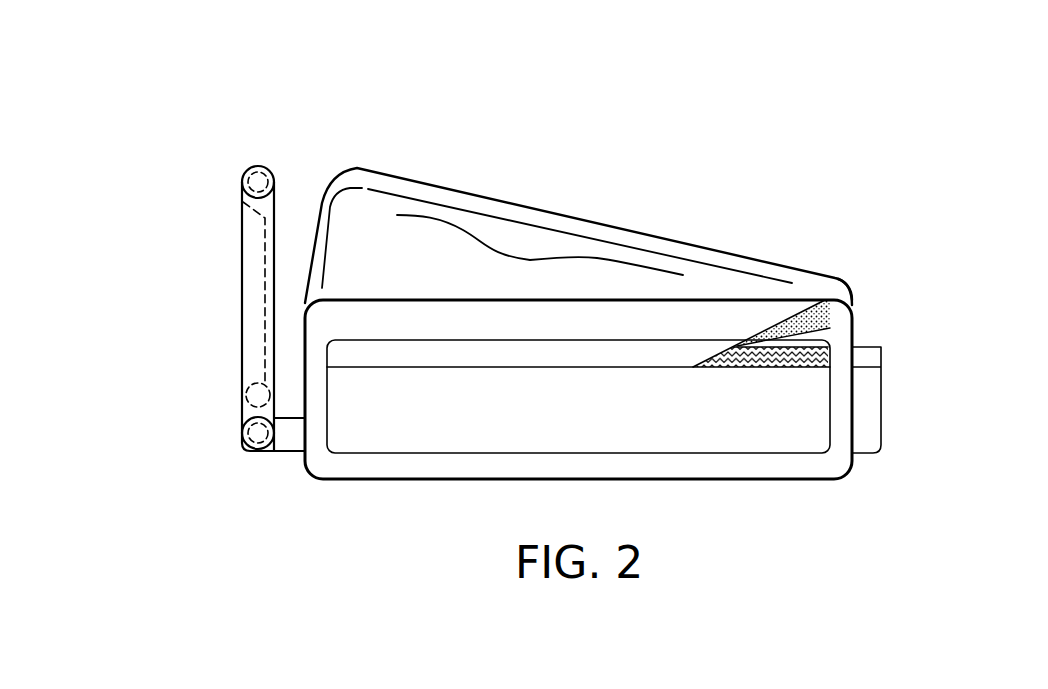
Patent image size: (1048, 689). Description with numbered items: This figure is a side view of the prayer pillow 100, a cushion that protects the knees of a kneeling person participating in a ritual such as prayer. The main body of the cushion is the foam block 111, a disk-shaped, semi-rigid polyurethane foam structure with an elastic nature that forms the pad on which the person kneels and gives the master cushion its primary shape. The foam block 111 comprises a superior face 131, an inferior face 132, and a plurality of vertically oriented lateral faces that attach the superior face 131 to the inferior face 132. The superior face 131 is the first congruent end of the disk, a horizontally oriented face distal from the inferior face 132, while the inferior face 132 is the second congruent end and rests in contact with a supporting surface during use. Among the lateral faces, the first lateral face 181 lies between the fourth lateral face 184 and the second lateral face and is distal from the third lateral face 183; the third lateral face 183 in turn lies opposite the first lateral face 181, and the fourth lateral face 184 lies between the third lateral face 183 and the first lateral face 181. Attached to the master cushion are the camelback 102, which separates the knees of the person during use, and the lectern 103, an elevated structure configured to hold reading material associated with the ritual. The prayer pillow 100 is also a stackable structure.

The prayer pillow 100 is at (842, 122).
The camelback 102 is at (455, 193).
The lectern 103 is at (242, 280).
The foam block 111 is at (852, 290).
The superior face 131 is at (697, 300).
The inferior face 132 is at (752, 478).
The first lateral face 181 is at (305, 352).
The third lateral face 183 is at (852, 327).
The fourth lateral face 184 is at (417, 462).